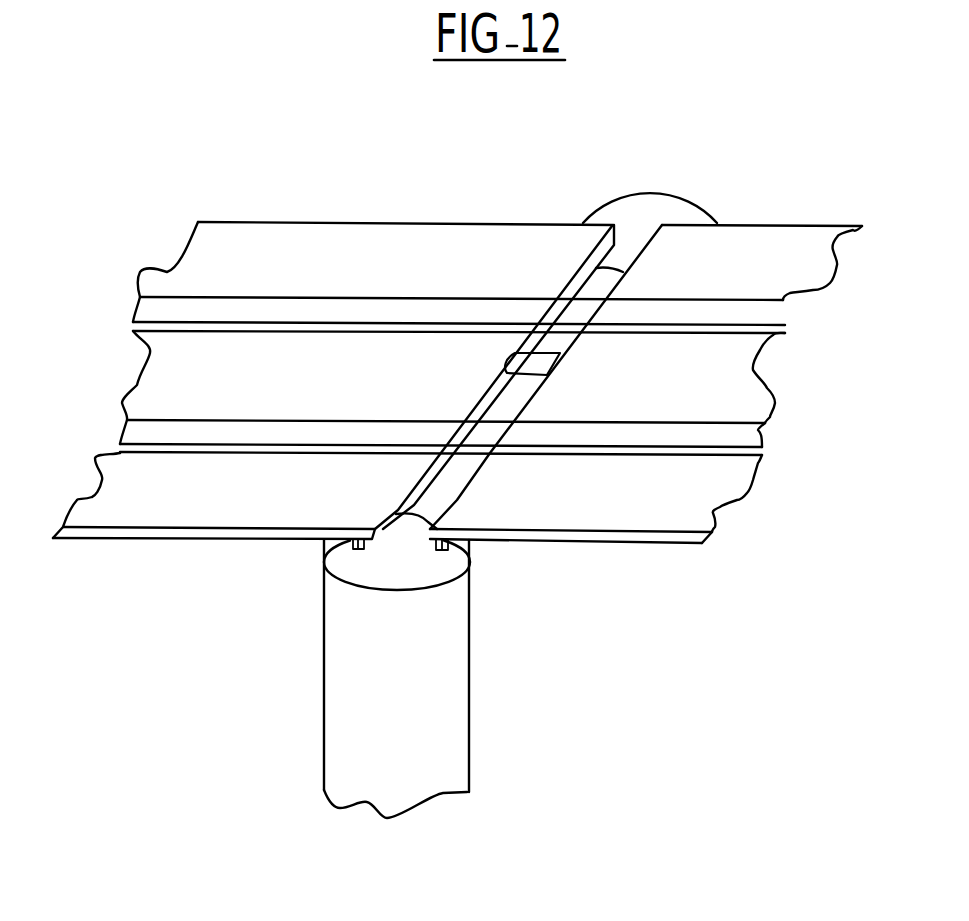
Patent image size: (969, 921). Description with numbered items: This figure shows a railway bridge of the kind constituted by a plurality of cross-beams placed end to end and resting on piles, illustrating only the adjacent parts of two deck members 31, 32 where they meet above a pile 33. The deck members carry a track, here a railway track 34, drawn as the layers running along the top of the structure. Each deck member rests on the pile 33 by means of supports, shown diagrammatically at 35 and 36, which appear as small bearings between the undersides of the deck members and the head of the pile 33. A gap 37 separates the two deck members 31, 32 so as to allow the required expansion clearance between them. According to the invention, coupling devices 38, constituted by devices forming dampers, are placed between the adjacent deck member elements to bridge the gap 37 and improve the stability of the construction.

The deck member 31 is at (399, 232).
The deck member 32 is at (767, 250).
The pile 33 is at (453, 633).
The railway track 34 is at (237, 313).
The support 35 is at (353, 543).
The support 36 is at (443, 550).
The gap 37 is at (460, 468).
The coupling device 38 is at (538, 363).